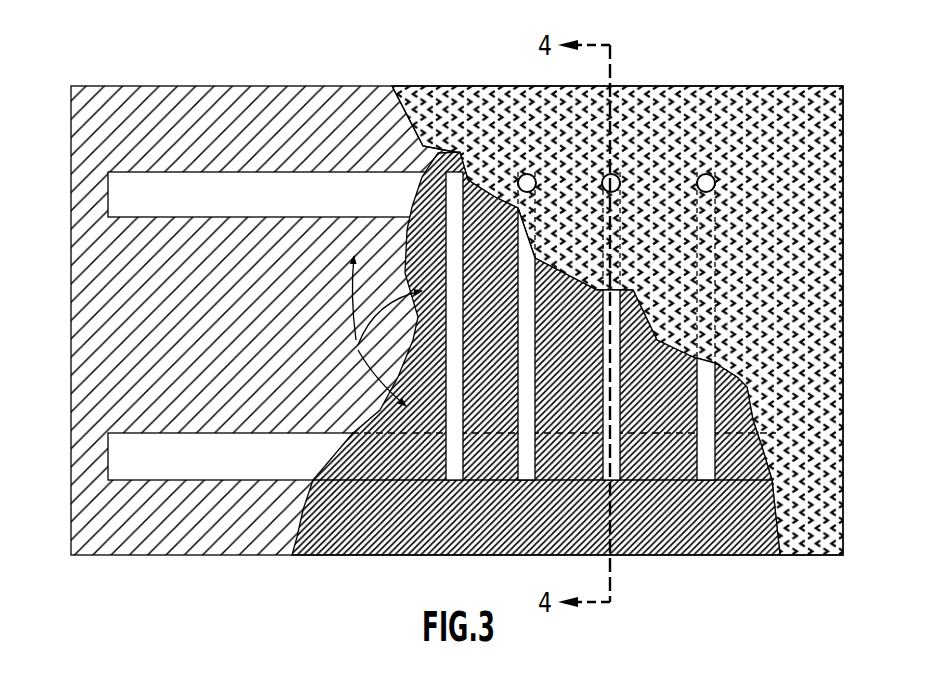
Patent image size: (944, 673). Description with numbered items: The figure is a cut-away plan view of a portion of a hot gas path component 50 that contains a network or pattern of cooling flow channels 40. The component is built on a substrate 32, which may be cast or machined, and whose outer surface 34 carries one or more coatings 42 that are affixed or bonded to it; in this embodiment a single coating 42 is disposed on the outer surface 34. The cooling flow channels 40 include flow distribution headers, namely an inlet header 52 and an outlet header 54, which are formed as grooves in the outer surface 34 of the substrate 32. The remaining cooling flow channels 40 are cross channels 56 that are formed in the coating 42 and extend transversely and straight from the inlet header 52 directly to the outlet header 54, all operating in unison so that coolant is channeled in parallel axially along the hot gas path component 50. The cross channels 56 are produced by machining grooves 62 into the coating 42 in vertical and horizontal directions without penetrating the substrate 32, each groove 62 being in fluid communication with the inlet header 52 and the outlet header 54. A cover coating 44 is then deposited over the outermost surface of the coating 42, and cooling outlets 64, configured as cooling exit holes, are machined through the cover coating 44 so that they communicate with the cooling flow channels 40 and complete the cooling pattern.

The substrate 32 is at (217, 98).
The outer surface 34 is at (100, 402).
The cooling flow channels 40 is at (373, 331).
The coating 42 is at (358, 550).
The cover coating 44 is at (798, 110).
The hot gas path component 50 is at (440, 303).
The inlet header 52 is at (212, 472).
The outlet header 54 is at (288, 211).
The cross channels 56 is at (714, 378).
The grooves 62 is at (615, 403).
The cooling outlets 64 is at (525, 173).